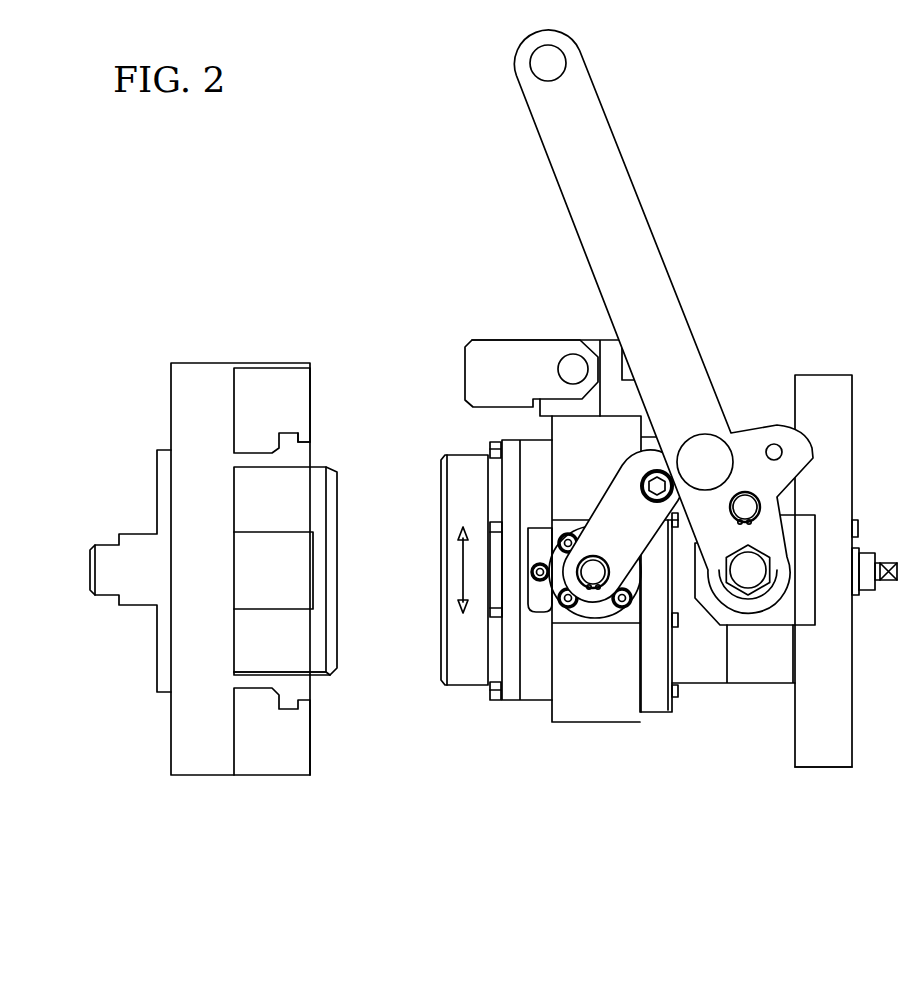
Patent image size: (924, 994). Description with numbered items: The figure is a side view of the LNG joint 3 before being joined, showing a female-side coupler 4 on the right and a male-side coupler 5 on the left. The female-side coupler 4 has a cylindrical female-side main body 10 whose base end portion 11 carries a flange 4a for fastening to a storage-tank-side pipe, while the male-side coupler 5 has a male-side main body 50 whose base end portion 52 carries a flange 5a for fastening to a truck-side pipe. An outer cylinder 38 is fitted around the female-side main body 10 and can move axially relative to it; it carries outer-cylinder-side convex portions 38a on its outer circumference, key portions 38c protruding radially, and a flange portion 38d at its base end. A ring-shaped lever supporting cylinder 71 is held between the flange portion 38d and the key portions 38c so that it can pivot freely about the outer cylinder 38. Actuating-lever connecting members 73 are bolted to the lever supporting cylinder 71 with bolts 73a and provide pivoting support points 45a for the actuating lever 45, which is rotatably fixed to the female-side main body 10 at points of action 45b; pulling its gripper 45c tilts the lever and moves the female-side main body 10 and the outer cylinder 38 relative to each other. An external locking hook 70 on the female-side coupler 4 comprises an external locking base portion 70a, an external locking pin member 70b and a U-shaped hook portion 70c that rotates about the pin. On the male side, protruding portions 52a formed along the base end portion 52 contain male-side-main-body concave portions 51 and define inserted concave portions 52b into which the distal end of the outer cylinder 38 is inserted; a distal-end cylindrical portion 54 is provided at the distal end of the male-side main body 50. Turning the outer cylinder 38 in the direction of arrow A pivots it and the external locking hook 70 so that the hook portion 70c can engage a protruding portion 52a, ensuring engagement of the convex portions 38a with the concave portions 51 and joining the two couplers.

The LNG joint 3 is at (364, 130).
The female-side coupler 4 is at (853, 577).
The flange 4a is at (823, 767).
The male-side coupler 5 is at (244, 583).
The flange 5a is at (205, 362).
The female-side main body 10 is at (708, 678).
The base end portion 11 is at (826, 375).
The outer cylinder 38 is at (535, 607).
The outer-cylinder-side convex portions 38a is at (490, 447).
The key portions 38c is at (540, 605).
The flange portion 38d is at (660, 700).
The actuating lever 45 is at (663, 355).
The pivoting support points 45a is at (703, 455).
The points of action 45b is at (748, 582).
The gripper 45c is at (553, 65).
The male-side main body 50 is at (315, 675).
The male-side-main-body concave portions 51 is at (310, 441).
The base end portion 52 is at (283, 572).
The protruding portions 52a is at (303, 393).
The inserted concave portions 52b is at (258, 468).
The distal-end cylindrical portion 54 is at (340, 553).
The external locking hook 70 is at (556, 332).
The external locking base portion 70a is at (540, 412).
The external locking pin member 70b is at (570, 366).
The hook portion 70c is at (483, 357).
The lever supporting cylinder 71 is at (568, 724).
The actuating-lever connecting members 73 is at (622, 500).
The bolts for the actuating-lever connecting member 73a is at (593, 592).
The arrow A is at (461, 573).